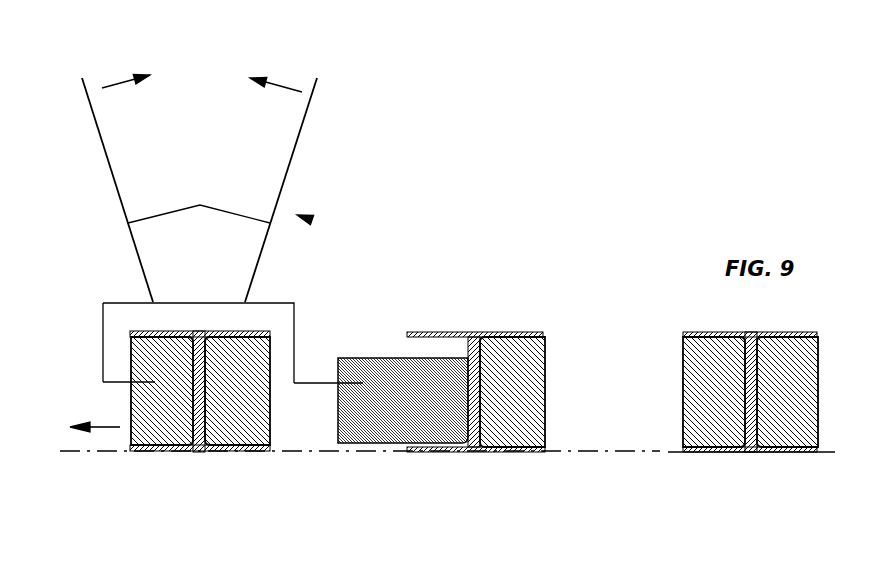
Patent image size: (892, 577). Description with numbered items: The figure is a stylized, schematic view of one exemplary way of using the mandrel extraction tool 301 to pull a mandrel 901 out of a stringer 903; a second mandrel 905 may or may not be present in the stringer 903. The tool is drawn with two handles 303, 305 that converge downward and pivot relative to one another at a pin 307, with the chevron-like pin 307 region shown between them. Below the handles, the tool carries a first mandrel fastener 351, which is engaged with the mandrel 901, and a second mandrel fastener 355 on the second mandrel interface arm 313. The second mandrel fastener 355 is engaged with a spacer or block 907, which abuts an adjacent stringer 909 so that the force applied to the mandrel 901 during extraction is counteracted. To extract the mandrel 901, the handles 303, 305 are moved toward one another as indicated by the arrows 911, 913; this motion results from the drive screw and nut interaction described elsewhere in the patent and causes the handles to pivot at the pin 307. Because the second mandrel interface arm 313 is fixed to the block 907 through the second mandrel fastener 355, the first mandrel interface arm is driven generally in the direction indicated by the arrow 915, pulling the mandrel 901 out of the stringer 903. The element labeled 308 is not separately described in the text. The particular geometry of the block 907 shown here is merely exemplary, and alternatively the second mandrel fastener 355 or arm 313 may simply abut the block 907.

The mandrel extraction tool 301 is at (312, 220).
The handle 303 is at (106, 148).
The handle 305 is at (297, 140).
The pin 307 is at (200, 205).
The housing left wall 308 is at (103, 327).
The second mandrel interface arm 313 is at (296, 314).
The first mandrel fastener 351 is at (117, 382).
The second mandrel fastener 355 is at (313, 383).
The mandrel 901 is at (170, 422).
The stringer 903 is at (200, 452).
The mandrel 905 is at (263, 420).
The block 907 is at (403, 400).
The adjacent stringer 909 is at (483, 452).
The arrow 911 is at (115, 82).
The arrow 913 is at (282, 82).
The arrow 915 is at (97, 428).